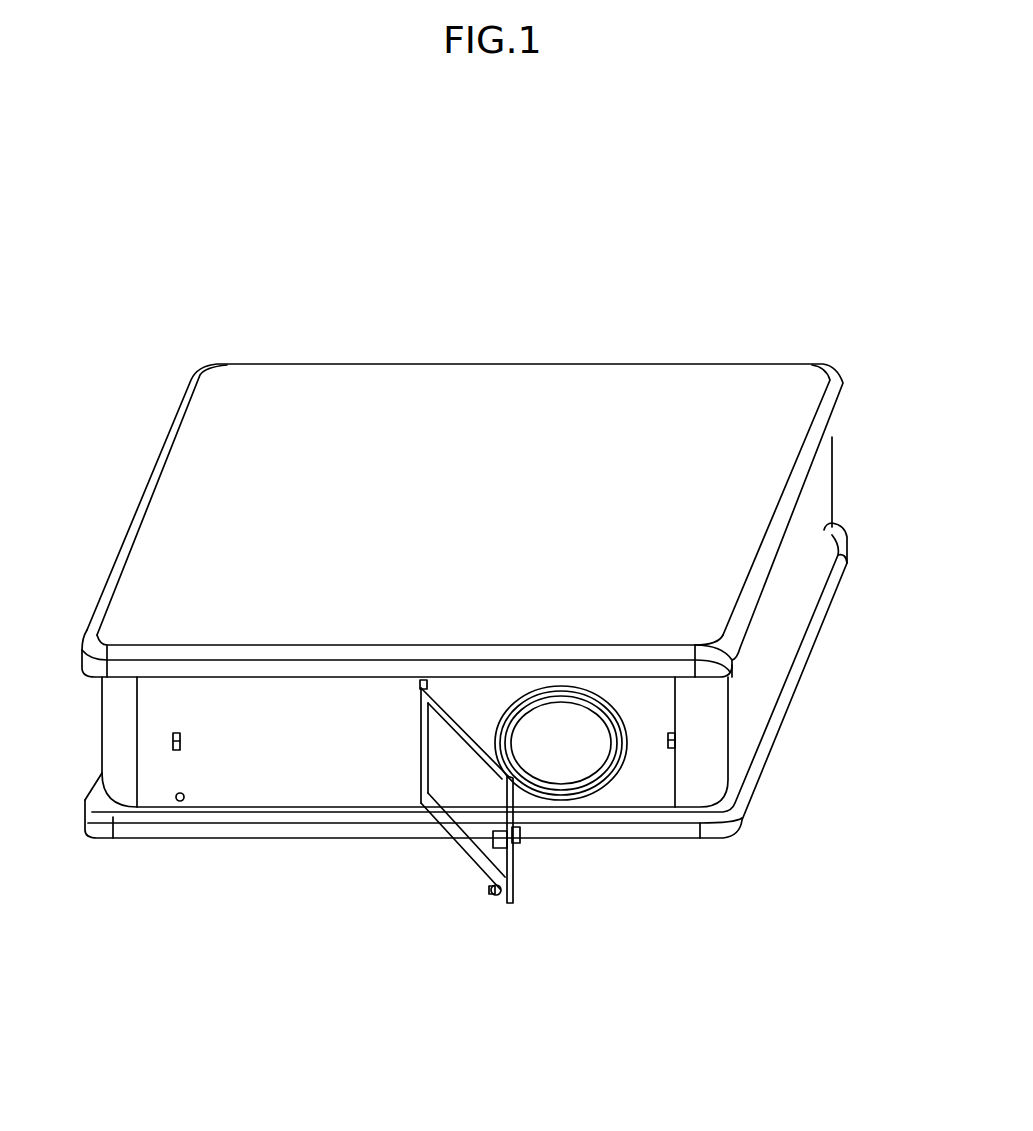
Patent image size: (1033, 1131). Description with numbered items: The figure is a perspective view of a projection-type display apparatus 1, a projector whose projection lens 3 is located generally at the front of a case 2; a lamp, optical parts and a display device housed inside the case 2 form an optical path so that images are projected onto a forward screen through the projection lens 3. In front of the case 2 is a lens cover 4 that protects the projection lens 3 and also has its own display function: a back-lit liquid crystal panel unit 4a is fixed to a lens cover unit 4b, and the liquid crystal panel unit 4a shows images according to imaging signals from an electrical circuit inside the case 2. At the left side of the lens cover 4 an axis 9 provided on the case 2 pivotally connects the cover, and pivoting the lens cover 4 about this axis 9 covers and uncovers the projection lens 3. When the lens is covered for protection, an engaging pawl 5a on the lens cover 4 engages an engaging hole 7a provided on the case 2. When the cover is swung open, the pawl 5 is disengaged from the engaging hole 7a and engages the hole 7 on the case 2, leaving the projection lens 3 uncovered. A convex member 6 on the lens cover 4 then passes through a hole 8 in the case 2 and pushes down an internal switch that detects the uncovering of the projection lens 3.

The projection-type display apparatus 1 is at (495, 330).
The case 2 is at (256, 386).
The projection lens 3 is at (553, 732).
The lens cover 4 is at (310, 852).
The liquid crystal panel unit 4a is at (453, 785).
The lens cover unit 4b is at (458, 848).
The engaging pawl 5 is at (496, 844).
The engaging pawl 5a is at (520, 830).
The convex member 6 is at (489, 892).
The hole 7 is at (172, 739).
The engaging hole 7a is at (677, 737).
The hole 8 is at (176, 800).
The axis 9 is at (424, 680).